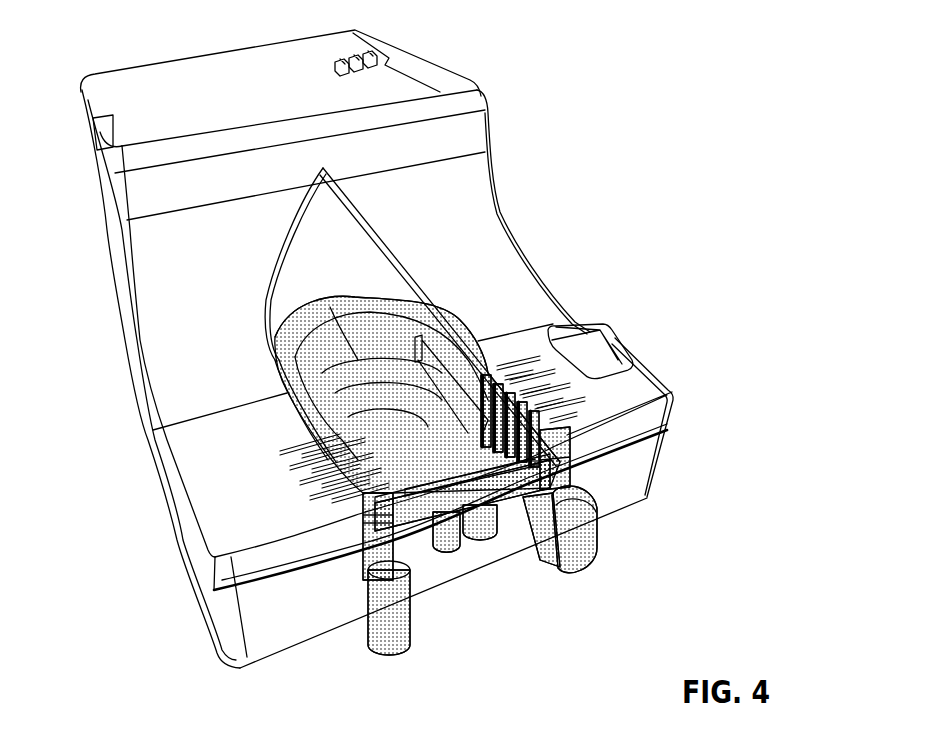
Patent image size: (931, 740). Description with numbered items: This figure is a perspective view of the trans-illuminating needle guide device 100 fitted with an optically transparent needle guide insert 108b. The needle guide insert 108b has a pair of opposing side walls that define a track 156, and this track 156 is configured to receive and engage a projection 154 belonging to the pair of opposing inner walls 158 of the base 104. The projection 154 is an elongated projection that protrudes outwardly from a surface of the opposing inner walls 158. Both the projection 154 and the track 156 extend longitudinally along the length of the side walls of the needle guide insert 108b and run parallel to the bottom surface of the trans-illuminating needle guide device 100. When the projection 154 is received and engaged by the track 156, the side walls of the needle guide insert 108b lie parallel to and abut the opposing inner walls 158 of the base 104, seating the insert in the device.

The trans-illuminating needle guide device 100 is at (524, 70).
The base 104 is at (607, 494).
The optically transparent needle guide insert 108b is at (412, 308).
The projection 154 is at (432, 348).
The track 156 is at (458, 362).
The pair of opposing inner walls 158 is at (372, 590).